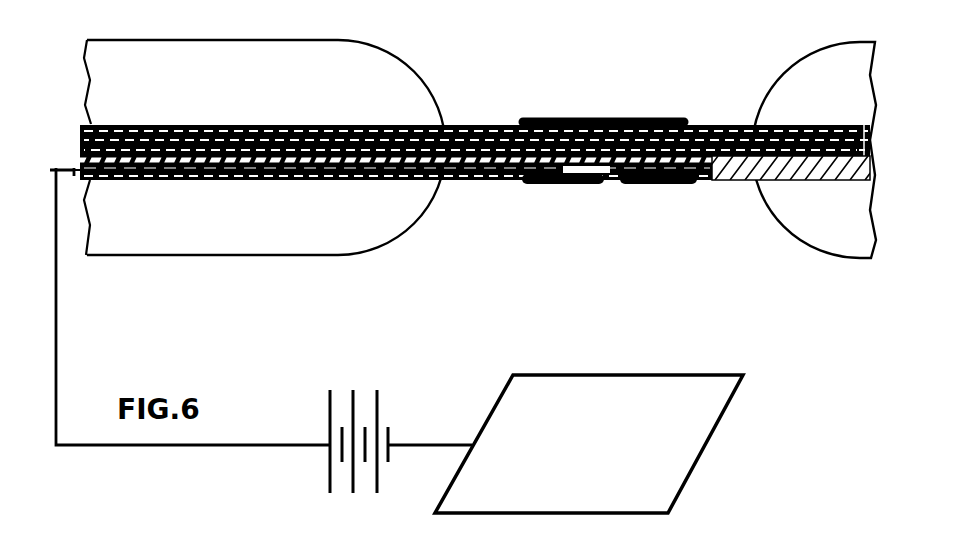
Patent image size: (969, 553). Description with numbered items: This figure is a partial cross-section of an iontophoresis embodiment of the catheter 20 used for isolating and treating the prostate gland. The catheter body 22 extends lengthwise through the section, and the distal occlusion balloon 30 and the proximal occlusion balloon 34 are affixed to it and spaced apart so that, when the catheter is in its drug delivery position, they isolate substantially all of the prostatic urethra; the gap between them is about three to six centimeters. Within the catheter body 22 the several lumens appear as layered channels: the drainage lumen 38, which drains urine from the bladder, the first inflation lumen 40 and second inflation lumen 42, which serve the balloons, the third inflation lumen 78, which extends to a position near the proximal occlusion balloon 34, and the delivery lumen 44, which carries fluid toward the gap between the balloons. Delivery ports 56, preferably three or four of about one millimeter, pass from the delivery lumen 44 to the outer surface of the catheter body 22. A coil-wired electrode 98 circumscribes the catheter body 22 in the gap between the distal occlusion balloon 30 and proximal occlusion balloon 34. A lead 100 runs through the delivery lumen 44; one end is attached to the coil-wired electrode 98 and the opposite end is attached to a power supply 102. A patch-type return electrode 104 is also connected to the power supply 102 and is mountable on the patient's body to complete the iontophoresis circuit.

The catheter 20 is at (73, 82).
The catheter body 22 is at (727, 126).
The distal occlusion balloon 30 is at (793, 66).
The proximal occlusion balloon 34 is at (215, 40).
The drainage lumen 38 is at (856, 128).
The first inflation lumen 40 is at (812, 126).
The second inflation lumen 42 is at (464, 126).
The delivery lumen 44 is at (584, 180).
The delivery ports 56 is at (535, 187).
The third inflation lumen 78 is at (377, 129).
The coil-wired electrode 98 is at (624, 118).
The lead 100 is at (77, 162).
The power supply 102 is at (329, 400).
The patch-type return electrode 104 is at (650, 378).